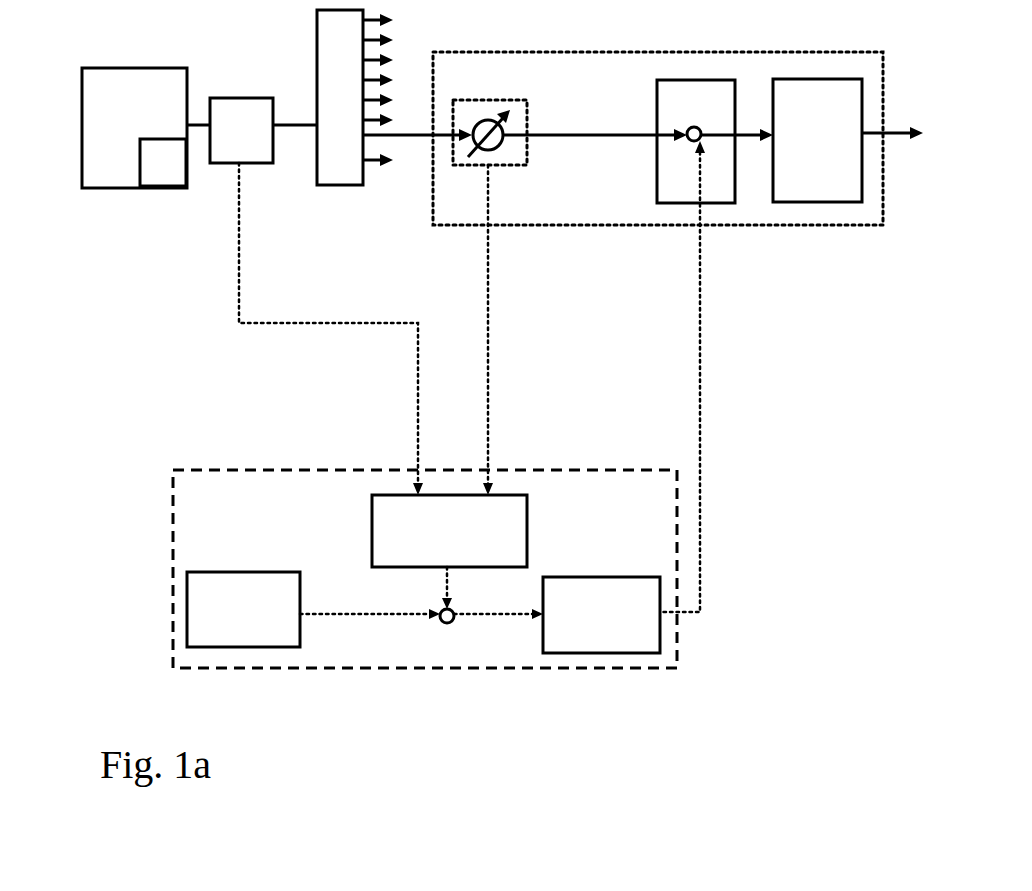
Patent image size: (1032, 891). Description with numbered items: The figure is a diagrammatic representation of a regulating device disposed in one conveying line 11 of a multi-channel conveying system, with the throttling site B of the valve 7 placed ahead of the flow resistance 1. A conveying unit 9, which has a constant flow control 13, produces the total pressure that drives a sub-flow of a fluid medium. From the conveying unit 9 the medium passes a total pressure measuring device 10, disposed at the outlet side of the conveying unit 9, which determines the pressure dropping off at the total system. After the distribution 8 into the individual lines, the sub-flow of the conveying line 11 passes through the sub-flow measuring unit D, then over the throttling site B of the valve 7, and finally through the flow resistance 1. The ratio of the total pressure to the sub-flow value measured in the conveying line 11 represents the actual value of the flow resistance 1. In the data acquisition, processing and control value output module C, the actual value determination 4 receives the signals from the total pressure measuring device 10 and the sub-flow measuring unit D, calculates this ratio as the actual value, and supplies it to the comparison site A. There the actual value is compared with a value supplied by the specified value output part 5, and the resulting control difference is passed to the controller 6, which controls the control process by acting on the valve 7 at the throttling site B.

The flow resistance 1 is at (817, 140).
The actual value determination 4 is at (449, 531).
The specified value output part 5 is at (243, 609).
The controller 6 is at (601, 615).
The valve 7 is at (696, 141).
The distribution 8 is at (355, 97).
The conveying unit 9 is at (134, 128).
The total pressure measuring device 10 is at (241, 130).
The conveying line 11 is at (658, 162).
The constant flow control 13 is at (163, 162).
The comparison site A is at (452, 643).
The throttling site B is at (693, 117).
The data acquisition, processing and control value output module C is at (428, 598).
The sub-flow measuring unit D is at (493, 158).